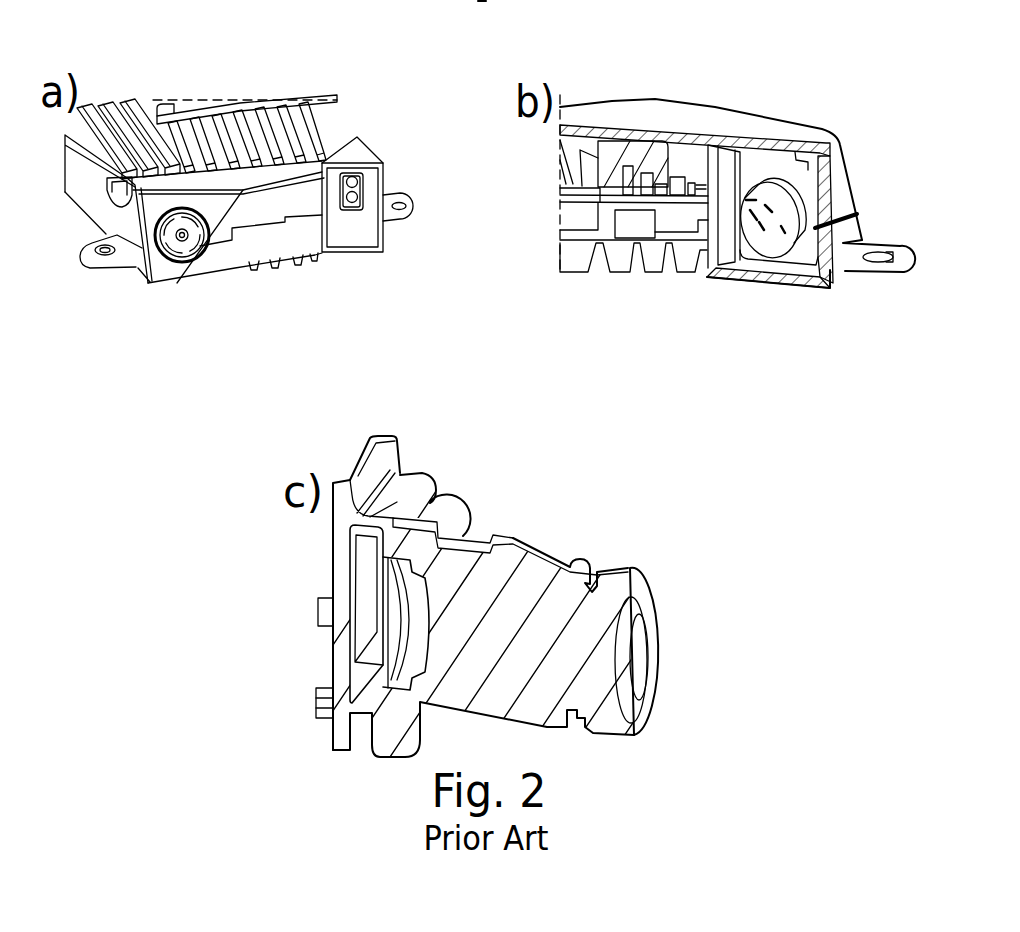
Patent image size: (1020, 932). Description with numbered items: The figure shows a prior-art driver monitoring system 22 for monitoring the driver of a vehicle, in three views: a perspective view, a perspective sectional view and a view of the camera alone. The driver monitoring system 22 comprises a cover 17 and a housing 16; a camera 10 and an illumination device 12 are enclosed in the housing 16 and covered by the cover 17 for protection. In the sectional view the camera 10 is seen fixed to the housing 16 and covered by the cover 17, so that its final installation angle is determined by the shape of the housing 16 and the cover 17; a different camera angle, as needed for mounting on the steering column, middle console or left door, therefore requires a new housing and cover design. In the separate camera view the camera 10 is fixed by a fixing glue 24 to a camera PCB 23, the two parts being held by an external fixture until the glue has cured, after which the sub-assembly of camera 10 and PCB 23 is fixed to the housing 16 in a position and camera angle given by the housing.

The camera 10 is at (158, 263).
The illumination device 12 is at (348, 210).
The housing 16 is at (227, 263).
The cover 17 is at (185, 110).
The driver monitoring system 22 is at (342, 86).
The camera PCB 23 is at (377, 450).
The fixing glue 24 is at (380, 493).